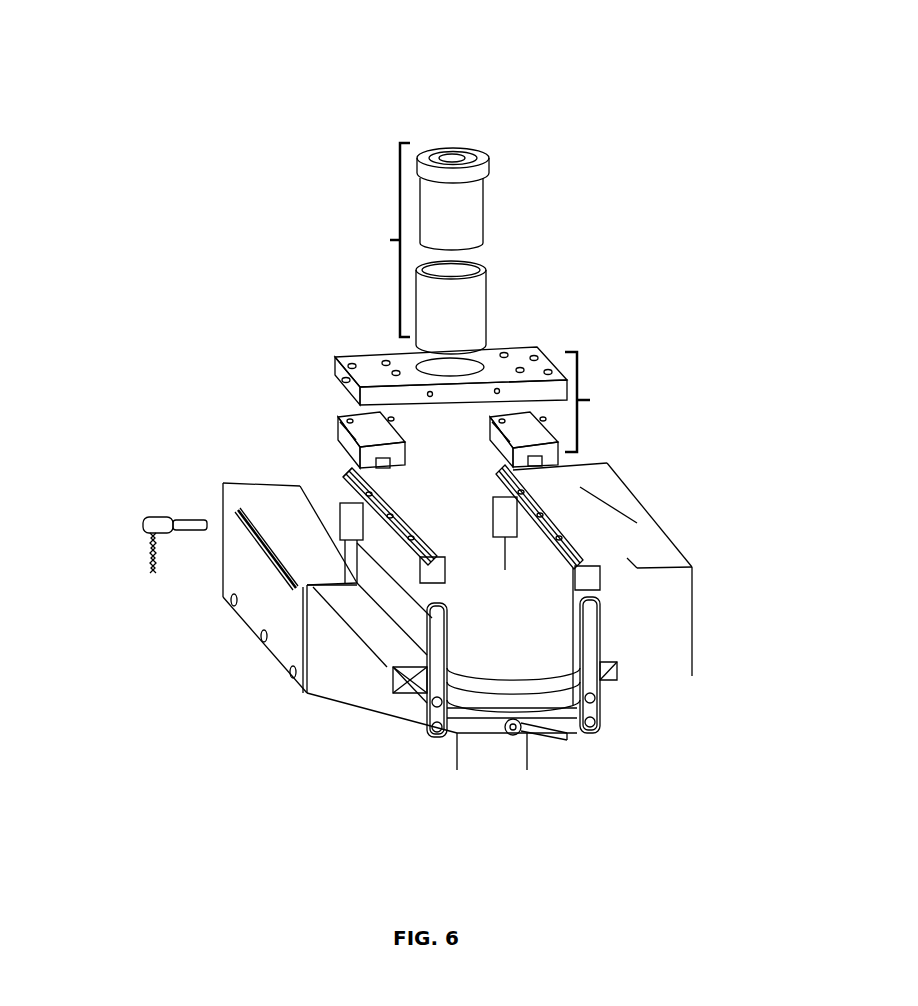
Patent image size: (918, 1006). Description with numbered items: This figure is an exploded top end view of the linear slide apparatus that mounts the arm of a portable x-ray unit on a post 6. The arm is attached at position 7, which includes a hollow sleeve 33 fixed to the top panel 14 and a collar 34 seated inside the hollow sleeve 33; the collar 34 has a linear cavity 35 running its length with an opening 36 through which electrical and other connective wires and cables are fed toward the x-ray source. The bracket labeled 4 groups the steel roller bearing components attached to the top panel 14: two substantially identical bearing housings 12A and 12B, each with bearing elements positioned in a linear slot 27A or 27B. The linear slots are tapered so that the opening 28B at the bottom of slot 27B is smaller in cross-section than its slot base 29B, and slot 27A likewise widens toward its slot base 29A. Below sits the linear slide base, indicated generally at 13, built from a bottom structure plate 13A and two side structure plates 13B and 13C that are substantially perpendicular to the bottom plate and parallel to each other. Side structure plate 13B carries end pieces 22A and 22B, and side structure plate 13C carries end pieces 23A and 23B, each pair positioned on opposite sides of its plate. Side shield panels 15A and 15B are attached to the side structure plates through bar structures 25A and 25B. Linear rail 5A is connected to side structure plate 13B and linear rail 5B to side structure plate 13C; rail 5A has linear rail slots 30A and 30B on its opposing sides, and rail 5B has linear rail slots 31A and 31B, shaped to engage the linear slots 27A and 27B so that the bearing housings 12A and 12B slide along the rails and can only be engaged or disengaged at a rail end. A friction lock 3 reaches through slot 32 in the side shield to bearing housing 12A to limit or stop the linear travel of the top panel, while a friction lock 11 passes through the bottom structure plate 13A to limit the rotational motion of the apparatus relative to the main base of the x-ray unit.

The friction lock 3 is at (129, 545).
The linear guide assembly 4 is at (650, 402).
The linear rail 5A is at (229, 428).
The linear rail 5B is at (602, 560).
The post 6 is at (294, 765).
The position 7 is at (266, 240).
The friction lock 11 is at (618, 770).
The bearing housing 12A is at (228, 383).
The bearing housing 12B is at (633, 446).
The base plate 13 is at (325, 714).
The bottom structure plate 13A is at (512, 779).
The side structure plate 13B is at (298, 643).
The side structure plate 13C is at (557, 763).
The top panel 14 is at (337, 343).
The side shield panel 15A is at (200, 588).
The side shield panel 15B is at (696, 584).
The end piece 22A is at (334, 722).
The end piece 22B is at (305, 523).
The end piece 23A is at (678, 710).
The end piece 23B is at (502, 538).
The bar structure 25A is at (372, 624).
The bar structure 25B is at (681, 688).
The linear slot 27A is at (411, 525).
The linear slot 27B is at (503, 509).
The opening 28B is at (639, 510).
The slot base 29A is at (337, 419).
The slot base 29B is at (486, 436).
The linear rail slot 30A is at (272, 620).
The linear rail slot 30B is at (513, 672).
The linear rail slot 31A is at (630, 665).
The linear rail slot 31B is at (491, 661).
The slot 32 is at (232, 552).
The hollow sleeve 33 is at (529, 307).
The collar 34 is at (528, 199).
The linear cavity 35 is at (442, 114).
The opening 36 is at (496, 115).